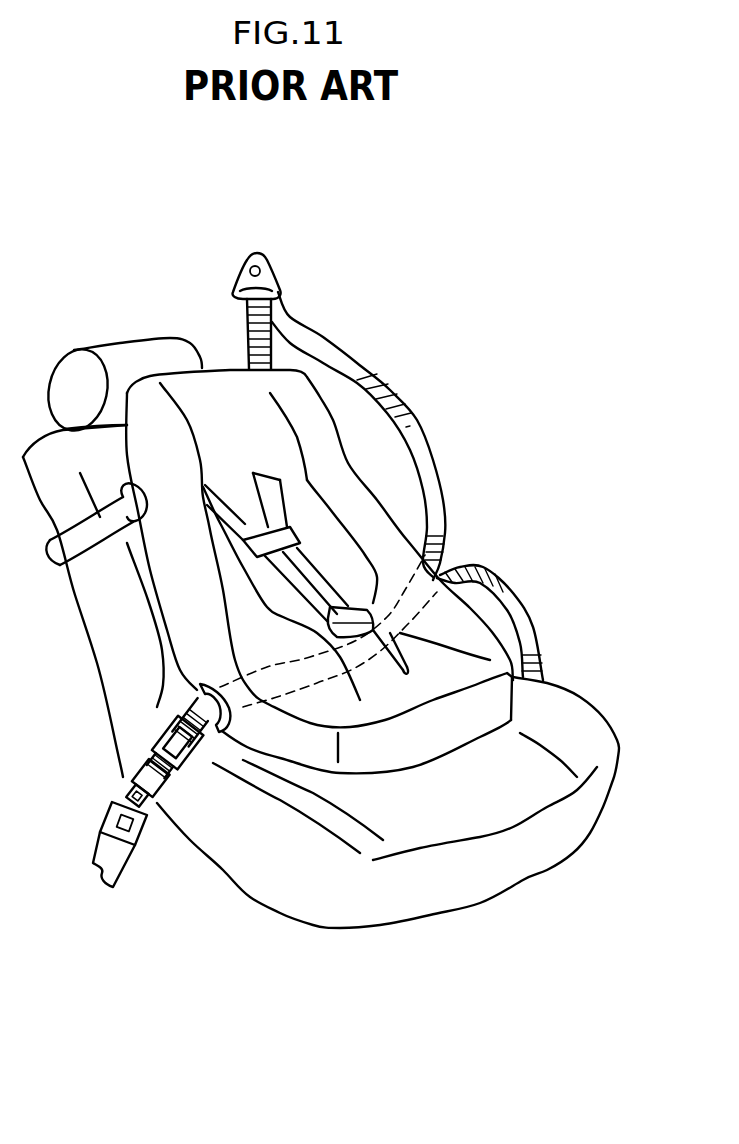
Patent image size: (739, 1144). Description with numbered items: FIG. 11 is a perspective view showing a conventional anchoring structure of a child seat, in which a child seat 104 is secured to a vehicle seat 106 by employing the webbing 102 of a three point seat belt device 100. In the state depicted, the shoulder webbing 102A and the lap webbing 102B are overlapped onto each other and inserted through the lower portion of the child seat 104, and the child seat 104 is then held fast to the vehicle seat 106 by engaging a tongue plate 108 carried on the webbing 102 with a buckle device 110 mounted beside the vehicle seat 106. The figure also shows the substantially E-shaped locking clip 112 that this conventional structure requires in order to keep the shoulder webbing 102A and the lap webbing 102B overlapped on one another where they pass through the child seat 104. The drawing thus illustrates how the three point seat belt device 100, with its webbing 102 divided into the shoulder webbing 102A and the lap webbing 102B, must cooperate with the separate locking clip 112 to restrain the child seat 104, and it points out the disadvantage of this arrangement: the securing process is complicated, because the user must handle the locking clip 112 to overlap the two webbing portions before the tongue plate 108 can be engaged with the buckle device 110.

The three point seat belt device 100 is at (372, 614).
The webbing 102 is at (419, 466).
The shoulder webbing 102A is at (430, 463).
The lap webbing 102B is at (503, 593).
The child seat 104 is at (417, 737).
The vehicle seat 106 is at (440, 915).
The tongue plate 108 is at (160, 802).
The buckle device 110 is at (138, 845).
The locking clip 112 is at (213, 763).